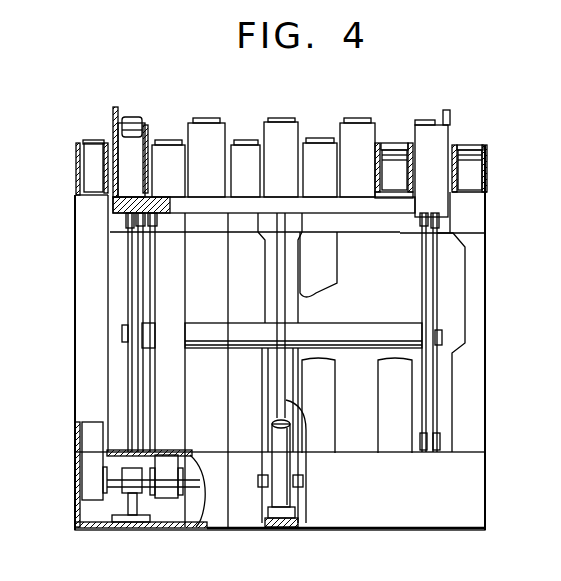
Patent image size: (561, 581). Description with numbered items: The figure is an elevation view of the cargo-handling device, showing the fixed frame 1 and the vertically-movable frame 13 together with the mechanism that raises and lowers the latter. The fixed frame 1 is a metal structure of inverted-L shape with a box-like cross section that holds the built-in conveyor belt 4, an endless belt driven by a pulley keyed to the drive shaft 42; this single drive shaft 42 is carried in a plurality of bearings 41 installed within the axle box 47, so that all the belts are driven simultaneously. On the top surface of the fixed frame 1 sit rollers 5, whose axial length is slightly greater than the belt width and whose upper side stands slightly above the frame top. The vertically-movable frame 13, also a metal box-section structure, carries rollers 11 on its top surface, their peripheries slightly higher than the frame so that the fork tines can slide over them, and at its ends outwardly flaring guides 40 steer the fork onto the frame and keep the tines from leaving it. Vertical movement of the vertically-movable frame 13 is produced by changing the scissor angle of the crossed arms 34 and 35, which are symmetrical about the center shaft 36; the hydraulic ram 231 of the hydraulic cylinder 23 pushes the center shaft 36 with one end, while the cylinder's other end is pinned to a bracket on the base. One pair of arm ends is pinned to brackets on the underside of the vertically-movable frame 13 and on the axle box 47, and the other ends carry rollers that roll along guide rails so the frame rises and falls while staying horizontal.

The fixed frame 1 is at (488, 168).
The outwardly flaring guide 40 is at (113, 107).
The conveyor belt 4 is at (167, 139).
The roller 11 is at (207, 116).
The vertically-movable frame 13 is at (272, 131).
The roller 5 is at (394, 143).
The crossed arm 34 is at (130, 262).
The crossed arm 35 is at (138, 291).
The center shaft 36 is at (346, 328).
The hydraulic ram 231 is at (288, 400).
The hydraulic cylinder 23 is at (290, 493).
The axle box 47 is at (472, 488).
The drive shaft 42 is at (112, 497).
The bearing 41 is at (162, 516).